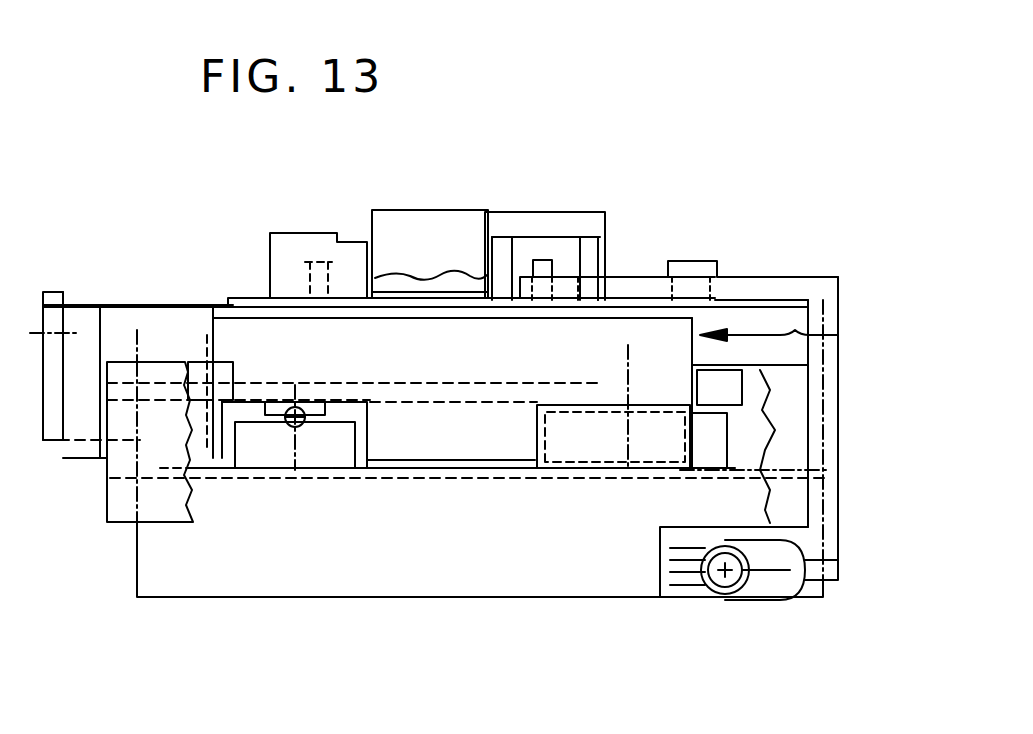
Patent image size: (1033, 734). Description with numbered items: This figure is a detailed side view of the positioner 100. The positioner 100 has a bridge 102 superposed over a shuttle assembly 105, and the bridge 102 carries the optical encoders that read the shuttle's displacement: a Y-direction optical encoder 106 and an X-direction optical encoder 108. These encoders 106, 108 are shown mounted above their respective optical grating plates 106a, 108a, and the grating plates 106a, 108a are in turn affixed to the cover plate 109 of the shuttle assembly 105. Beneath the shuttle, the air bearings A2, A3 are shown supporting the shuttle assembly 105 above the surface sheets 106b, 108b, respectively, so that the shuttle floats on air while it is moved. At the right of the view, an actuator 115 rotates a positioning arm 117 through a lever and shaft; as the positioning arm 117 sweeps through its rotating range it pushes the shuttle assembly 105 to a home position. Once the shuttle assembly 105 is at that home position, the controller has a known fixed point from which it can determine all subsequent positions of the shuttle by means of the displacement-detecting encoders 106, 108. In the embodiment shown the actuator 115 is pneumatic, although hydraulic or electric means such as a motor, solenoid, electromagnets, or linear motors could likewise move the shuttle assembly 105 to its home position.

The positioner 100 is at (762, 124).
The bridge 102 is at (420, 228).
The shuttle assembly 105 is at (838, 335).
The Y-direction optical encoder 106 is at (560, 300).
The optical grating plate 106a is at (577, 298).
The surface sheet 106b is at (548, 480).
The X-direction optical encoder 108 is at (300, 272).
The optical grating plate 108a is at (256, 295).
The surface sheet 108b is at (215, 470).
The cover plate 109 is at (228, 313).
The actuator 115 is at (790, 588).
The positioning arm 117 is at (752, 277).
The air bearing A2 is at (228, 452).
The air bearing A3 is at (727, 440).